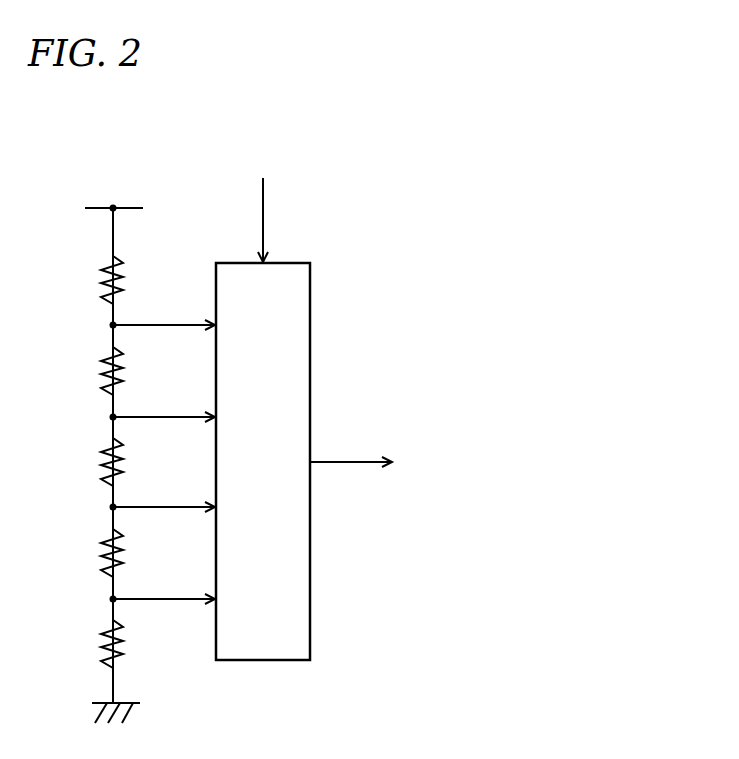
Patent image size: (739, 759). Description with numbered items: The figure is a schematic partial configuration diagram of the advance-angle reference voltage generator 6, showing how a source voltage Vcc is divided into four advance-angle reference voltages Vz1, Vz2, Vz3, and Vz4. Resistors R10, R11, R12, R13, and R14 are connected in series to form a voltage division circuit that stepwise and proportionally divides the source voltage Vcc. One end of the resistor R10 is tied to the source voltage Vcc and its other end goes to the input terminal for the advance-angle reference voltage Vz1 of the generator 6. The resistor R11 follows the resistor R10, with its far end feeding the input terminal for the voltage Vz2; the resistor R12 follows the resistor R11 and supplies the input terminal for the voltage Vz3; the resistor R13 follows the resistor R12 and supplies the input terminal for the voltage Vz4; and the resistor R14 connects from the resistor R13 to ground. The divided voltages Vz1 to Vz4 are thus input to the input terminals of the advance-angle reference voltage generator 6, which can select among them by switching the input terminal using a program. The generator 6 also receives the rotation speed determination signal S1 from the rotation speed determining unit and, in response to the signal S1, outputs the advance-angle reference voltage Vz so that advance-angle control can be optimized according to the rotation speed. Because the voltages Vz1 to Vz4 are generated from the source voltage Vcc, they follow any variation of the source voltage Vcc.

The advance-angle reference voltage generator 6 is at (310, 352).
The resistor R10 is at (92, 280).
The resistor R11 is at (92, 371).
The resistor R12 is at (92, 462).
The resistor R13 is at (92, 553).
The resistor R14 is at (92, 644).
The source voltage Vcc is at (114, 194).
The advance-angle reference voltage Vz1 is at (163, 310).
The advance-angle reference voltage Vz2 is at (163, 402).
The advance-angle reference voltage Vz3 is at (163, 492).
The advance-angle reference voltage Vz4 is at (163, 584).
The rotation speed determination signal S1 is at (275, 220).
The advance-angle reference voltage Vz is at (351, 447).